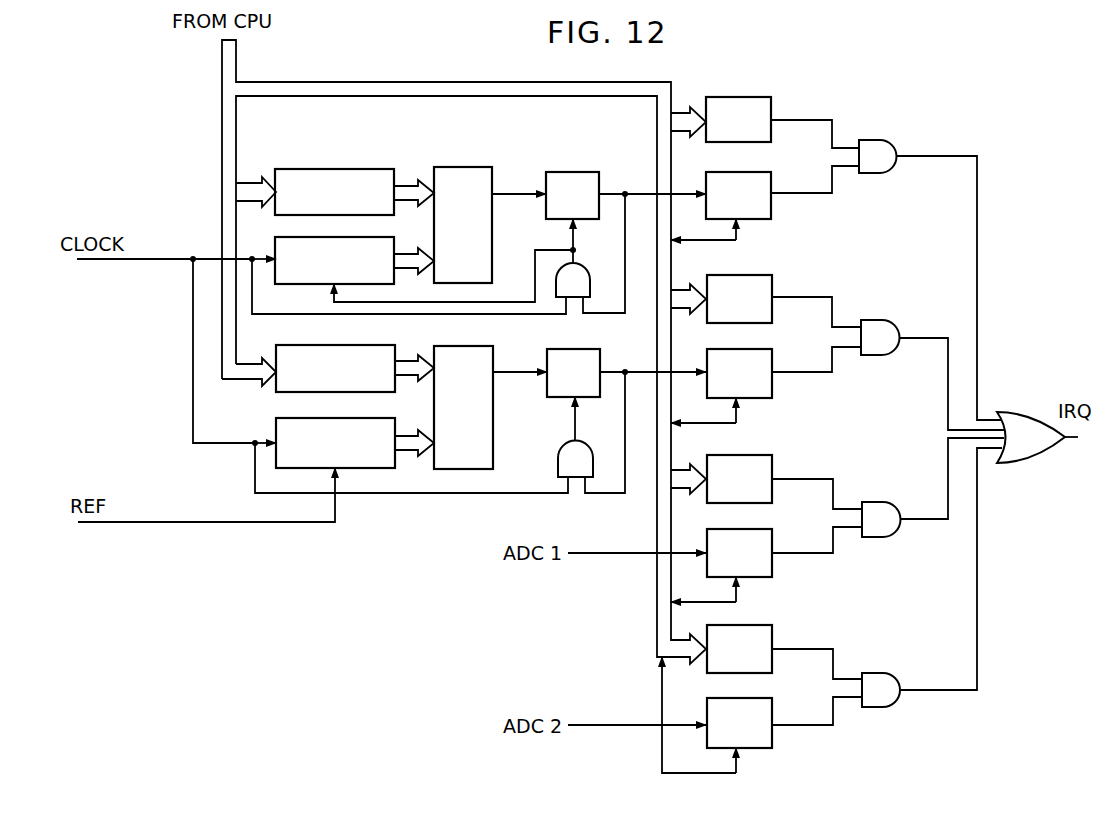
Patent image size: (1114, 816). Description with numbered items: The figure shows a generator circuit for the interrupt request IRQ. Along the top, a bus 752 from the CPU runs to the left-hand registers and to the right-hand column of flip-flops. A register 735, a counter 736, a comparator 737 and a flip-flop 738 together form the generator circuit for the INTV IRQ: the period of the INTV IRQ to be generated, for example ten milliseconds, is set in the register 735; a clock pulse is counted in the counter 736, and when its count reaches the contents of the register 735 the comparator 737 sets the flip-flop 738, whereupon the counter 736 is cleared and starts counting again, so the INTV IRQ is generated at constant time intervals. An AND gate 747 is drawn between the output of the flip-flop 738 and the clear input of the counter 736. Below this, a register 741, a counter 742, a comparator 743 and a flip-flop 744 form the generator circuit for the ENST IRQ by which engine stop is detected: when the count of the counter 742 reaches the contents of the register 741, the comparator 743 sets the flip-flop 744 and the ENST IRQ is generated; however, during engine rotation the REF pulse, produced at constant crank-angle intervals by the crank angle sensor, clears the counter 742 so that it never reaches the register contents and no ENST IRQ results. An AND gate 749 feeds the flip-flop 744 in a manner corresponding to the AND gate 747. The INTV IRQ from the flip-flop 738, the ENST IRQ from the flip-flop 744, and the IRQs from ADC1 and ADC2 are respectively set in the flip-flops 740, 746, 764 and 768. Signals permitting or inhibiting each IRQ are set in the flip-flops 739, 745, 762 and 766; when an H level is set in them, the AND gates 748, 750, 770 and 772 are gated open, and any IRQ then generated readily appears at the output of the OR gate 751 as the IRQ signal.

The register 735 is at (343, 169).
The counter 736 is at (320, 284).
The comparator 737 is at (458, 167).
The flip-flop 738 is at (563, 172).
The flip-flop 739 is at (790, 92).
The flip-flop 740 is at (800, 174).
The register 741 is at (345, 345).
The counter 742 is at (278, 420).
The comparator 743 is at (448, 346).
The flip-flop 744 is at (583, 349).
The flip-flop 745 is at (795, 270).
The flip-flop 746 is at (795, 355).
The AND gate 747 is at (590, 282).
The AND gate 748 is at (876, 140).
The AND gate 749 is at (558, 462).
The AND gate 750 is at (878, 320).
The OR gate 751 is at (1024, 412).
The bus from CPU 752 is at (388, 82).
The flip-flop 762 is at (795, 459).
The flip-flop 764 is at (795, 535).
The flip-flop 766 is at (795, 629).
The flip-flop 768 is at (795, 709).
The AND gate 770 is at (868, 502).
The AND gate 772 is at (876, 673).